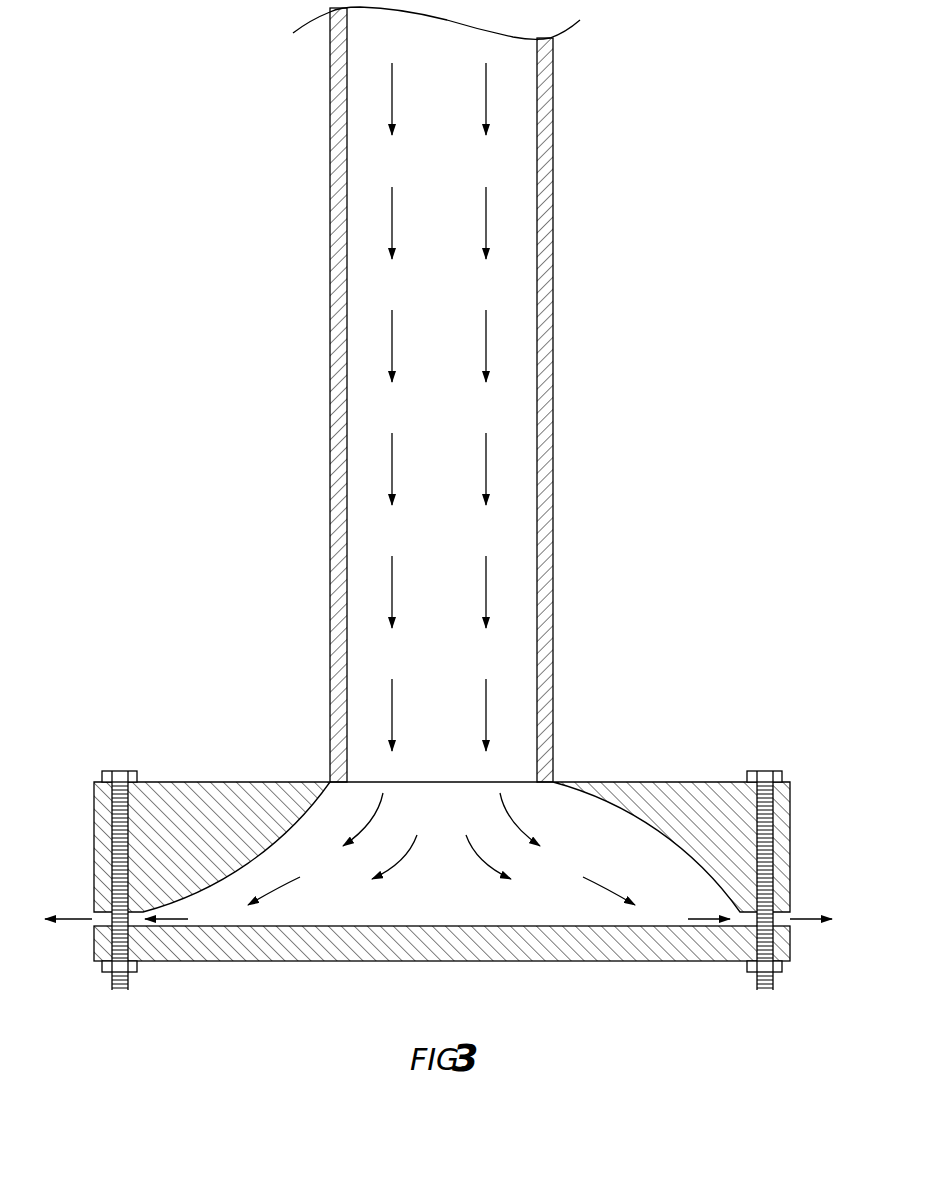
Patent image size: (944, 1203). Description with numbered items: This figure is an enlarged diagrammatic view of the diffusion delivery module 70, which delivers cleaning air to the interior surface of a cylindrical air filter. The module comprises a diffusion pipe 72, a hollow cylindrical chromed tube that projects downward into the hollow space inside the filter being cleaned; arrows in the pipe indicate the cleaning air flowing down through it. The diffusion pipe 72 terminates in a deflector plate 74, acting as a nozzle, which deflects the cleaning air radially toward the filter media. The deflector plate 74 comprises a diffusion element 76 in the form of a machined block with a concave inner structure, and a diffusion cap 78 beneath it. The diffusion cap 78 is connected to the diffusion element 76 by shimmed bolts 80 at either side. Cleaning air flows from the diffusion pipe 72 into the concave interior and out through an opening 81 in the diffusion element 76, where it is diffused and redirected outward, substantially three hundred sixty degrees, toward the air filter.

The diffusion delivery module 70 is at (688, 290).
The diffusion pipe 72 is at (553, 348).
The deflector plate 74 is at (158, 753).
The diffusion element 76 is at (660, 783).
The diffusion cap 78 is at (648, 961).
The shimmed bolts 80 is at (770, 832).
The opening 81 is at (800, 928).